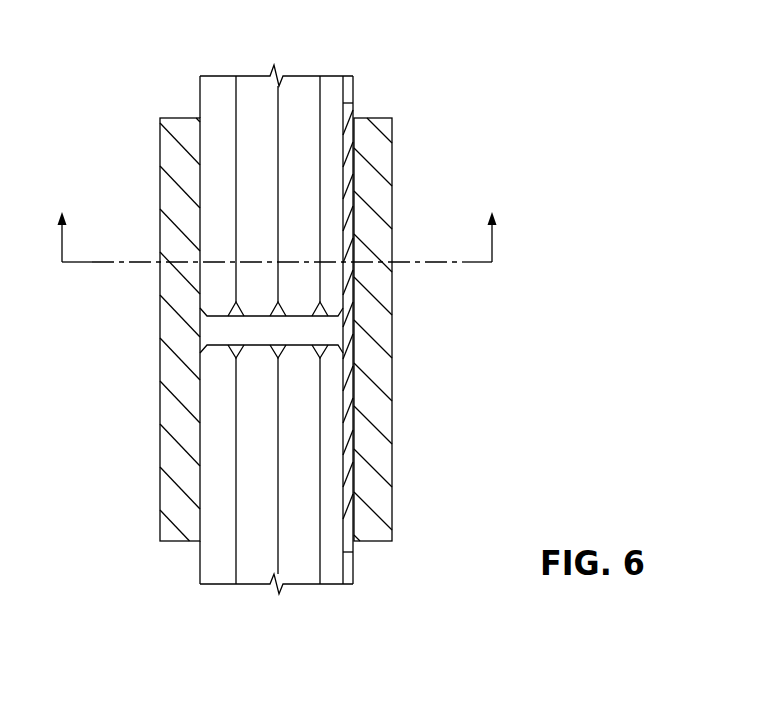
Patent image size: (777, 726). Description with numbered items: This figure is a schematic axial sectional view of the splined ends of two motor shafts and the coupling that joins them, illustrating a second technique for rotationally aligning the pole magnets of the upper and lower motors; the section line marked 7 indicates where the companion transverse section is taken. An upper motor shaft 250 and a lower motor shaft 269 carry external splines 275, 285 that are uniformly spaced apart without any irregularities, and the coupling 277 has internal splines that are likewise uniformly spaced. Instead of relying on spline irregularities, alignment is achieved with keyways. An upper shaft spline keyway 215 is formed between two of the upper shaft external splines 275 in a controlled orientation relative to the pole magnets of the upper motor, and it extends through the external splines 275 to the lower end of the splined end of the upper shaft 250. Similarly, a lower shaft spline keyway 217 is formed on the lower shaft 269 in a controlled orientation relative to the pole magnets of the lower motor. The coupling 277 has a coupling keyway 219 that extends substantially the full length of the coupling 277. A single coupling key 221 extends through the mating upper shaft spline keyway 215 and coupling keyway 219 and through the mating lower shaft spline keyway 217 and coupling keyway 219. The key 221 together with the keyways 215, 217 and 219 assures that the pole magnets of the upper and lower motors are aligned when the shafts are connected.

The section line 7- 7 is at (278, 222).
The upper shaft spline keyway 215 is at (345, 95).
The lower shaft spline keyway 217 is at (343, 460).
The coupling keyway 219 is at (348, 386).
The coupling key 221 is at (347, 165).
The upper motor shaft 250 is at (200, 100).
The lower motor shaft 269 is at (200, 562).
The external splines 275 is at (258, 95).
The coupling 277 is at (172, 370).
The external splines 285 is at (216, 439).